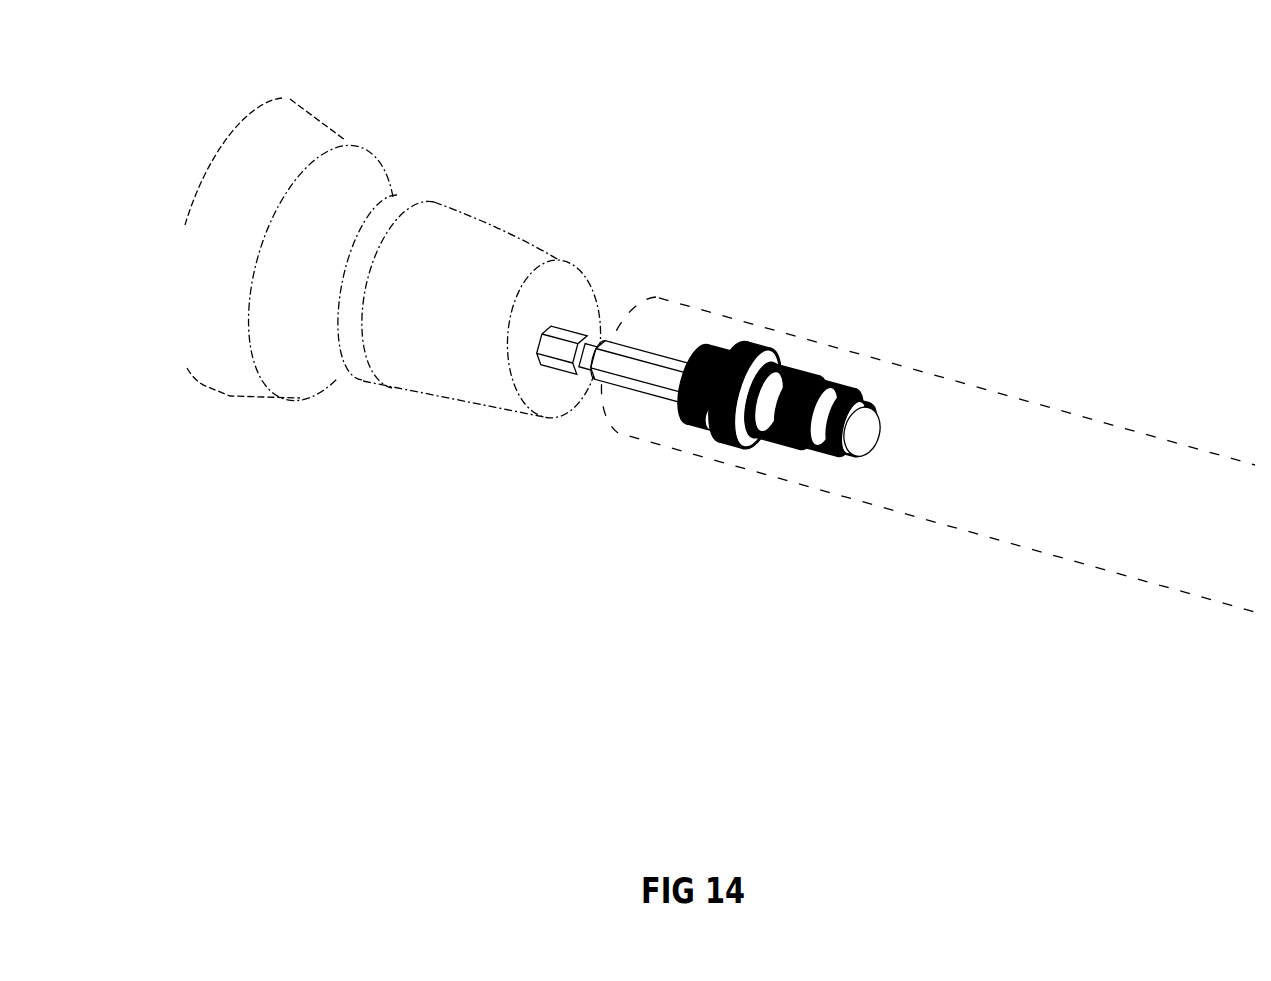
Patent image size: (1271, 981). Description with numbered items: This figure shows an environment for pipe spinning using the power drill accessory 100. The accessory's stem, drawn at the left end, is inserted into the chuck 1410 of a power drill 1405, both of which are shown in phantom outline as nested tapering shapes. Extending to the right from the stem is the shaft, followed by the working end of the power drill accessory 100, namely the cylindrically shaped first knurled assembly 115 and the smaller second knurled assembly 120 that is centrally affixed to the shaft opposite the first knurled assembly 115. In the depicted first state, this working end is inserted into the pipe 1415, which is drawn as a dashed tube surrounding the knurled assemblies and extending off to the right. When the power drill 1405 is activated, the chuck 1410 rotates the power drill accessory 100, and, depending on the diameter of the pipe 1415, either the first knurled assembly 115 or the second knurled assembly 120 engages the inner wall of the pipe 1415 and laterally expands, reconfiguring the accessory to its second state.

The power drill accessory 100 is at (639, 348).
The first knurled assembly 115 is at (749, 338).
The second knurled assembly 120 is at (836, 464).
The power drill 1405 is at (282, 98).
The chuck 1410 is at (485, 224).
The pipe 1415 is at (1085, 412).